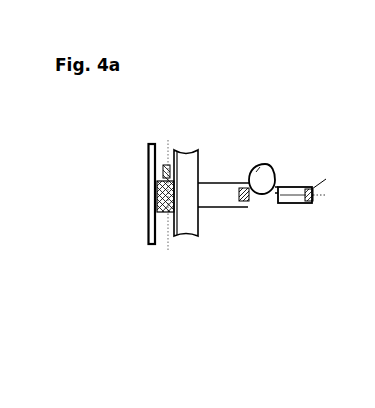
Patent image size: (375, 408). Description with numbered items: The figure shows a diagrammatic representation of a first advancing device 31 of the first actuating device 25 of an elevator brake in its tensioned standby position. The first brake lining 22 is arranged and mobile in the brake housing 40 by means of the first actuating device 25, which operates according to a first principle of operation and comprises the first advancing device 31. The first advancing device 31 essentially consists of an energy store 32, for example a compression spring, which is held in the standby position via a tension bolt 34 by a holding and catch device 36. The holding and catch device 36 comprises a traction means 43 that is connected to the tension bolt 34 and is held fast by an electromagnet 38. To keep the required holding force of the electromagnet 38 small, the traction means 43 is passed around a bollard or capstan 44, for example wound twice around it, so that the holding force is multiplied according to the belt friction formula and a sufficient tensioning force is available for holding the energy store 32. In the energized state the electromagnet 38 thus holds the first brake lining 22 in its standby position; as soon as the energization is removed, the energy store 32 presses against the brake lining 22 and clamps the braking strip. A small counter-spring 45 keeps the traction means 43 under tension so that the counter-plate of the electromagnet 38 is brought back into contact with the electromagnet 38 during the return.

The first brake lining 22 is at (147, 197).
The first actuating device 25 is at (257, 122).
The holding and catch device 36 is at (278, 207).
The first advancing device 31 is at (163, 246).
The energy store 32 is at (168, 245).
The tension bolt 34 is at (223, 245).
The brake housing 40 is at (197, 245).
The traction means 43 is at (252, 196).
The bollard or capstan 44 is at (262, 193).
The counter-spring 45 is at (300, 205).
The electromagnet 38 is at (316, 206).